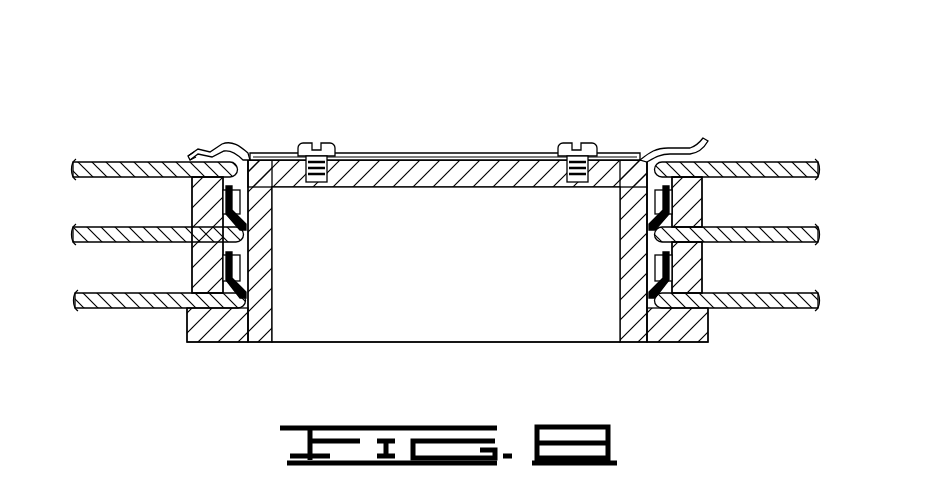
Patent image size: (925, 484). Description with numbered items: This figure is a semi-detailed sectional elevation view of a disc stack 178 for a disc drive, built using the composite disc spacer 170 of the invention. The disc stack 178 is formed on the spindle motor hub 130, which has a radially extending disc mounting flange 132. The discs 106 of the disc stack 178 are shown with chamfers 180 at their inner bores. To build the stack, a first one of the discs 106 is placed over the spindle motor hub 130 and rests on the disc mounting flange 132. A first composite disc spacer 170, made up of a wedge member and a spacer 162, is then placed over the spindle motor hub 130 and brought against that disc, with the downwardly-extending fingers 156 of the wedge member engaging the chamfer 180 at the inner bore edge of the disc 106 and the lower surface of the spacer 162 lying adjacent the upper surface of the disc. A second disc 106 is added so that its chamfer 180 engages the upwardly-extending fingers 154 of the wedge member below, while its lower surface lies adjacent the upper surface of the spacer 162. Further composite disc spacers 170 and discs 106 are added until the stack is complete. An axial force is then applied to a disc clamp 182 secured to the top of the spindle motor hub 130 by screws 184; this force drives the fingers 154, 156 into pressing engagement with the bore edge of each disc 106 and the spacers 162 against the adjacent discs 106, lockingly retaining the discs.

The disc 106 is at (143, 310).
The spindle motor hub 130 is at (437, 153).
The disc mounting flange 132 is at (705, 342).
The upwardly-extending fingers 154 is at (648, 255).
The downwardly-extending fingers 156 is at (247, 218).
The spacer 162 is at (690, 200).
The composite disc spacer 170 is at (192, 212).
The disc stack 178 is at (703, 124).
The chamfer 180 is at (248, 158).
The disc clamp 182 is at (230, 148).
The screw 184 is at (303, 148).